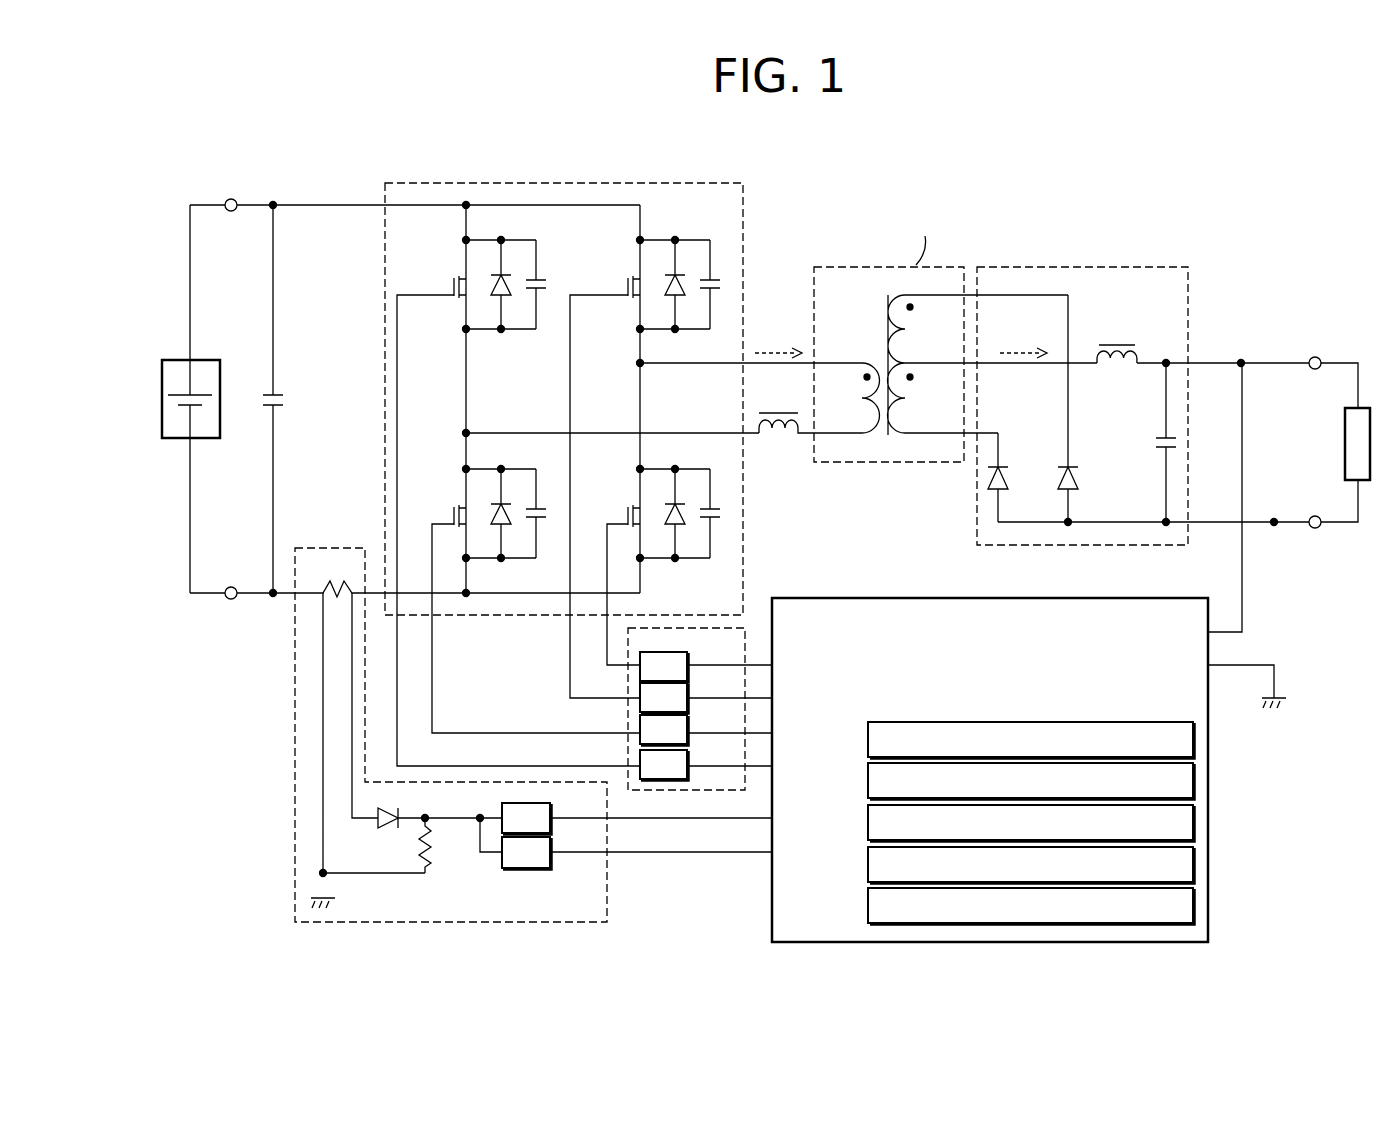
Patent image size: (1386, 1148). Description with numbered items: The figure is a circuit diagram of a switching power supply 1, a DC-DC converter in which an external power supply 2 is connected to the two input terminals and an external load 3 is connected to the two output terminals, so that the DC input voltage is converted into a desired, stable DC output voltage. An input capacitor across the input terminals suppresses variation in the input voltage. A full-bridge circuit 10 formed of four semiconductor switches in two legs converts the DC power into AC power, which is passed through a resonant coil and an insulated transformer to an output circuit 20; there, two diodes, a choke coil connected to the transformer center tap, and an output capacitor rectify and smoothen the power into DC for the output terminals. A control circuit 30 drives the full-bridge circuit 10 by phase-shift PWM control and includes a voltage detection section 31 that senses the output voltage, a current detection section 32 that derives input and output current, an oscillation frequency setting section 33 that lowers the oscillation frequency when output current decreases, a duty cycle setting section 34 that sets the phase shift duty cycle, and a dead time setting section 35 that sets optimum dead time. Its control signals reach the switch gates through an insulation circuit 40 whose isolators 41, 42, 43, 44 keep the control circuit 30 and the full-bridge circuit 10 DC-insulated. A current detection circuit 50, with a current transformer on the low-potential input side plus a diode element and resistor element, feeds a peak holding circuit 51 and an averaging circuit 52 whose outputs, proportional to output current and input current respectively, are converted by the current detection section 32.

The switching power supply 1 is at (304, 135).
The external power supply 2 is at (205, 444).
The external load 3 is at (1345, 456).
The full-bridge circuit 10 is at (700, 183).
The output circuit 20 is at (1092, 265).
The control circuit 30 is at (835, 598).
The voltage detection section 31 is at (1194, 737).
The current detection section 32 is at (1194, 779).
The oscillation frequency setting section 33 is at (1194, 820).
The duty cycle setting section 34 is at (1194, 862).
The dead time setting section 35 is at (1194, 904).
The insulation circuit 40 is at (628, 714).
The isolator 41 is at (687, 683).
The isolator 42 is at (687, 652).
The isolator 43 is at (687, 750).
The isolator 44 is at (687, 715).
The current detection circuit 50 is at (295, 782).
The peak holding circuit 51 is at (550, 803).
The averaging circuit 52 is at (550, 837).